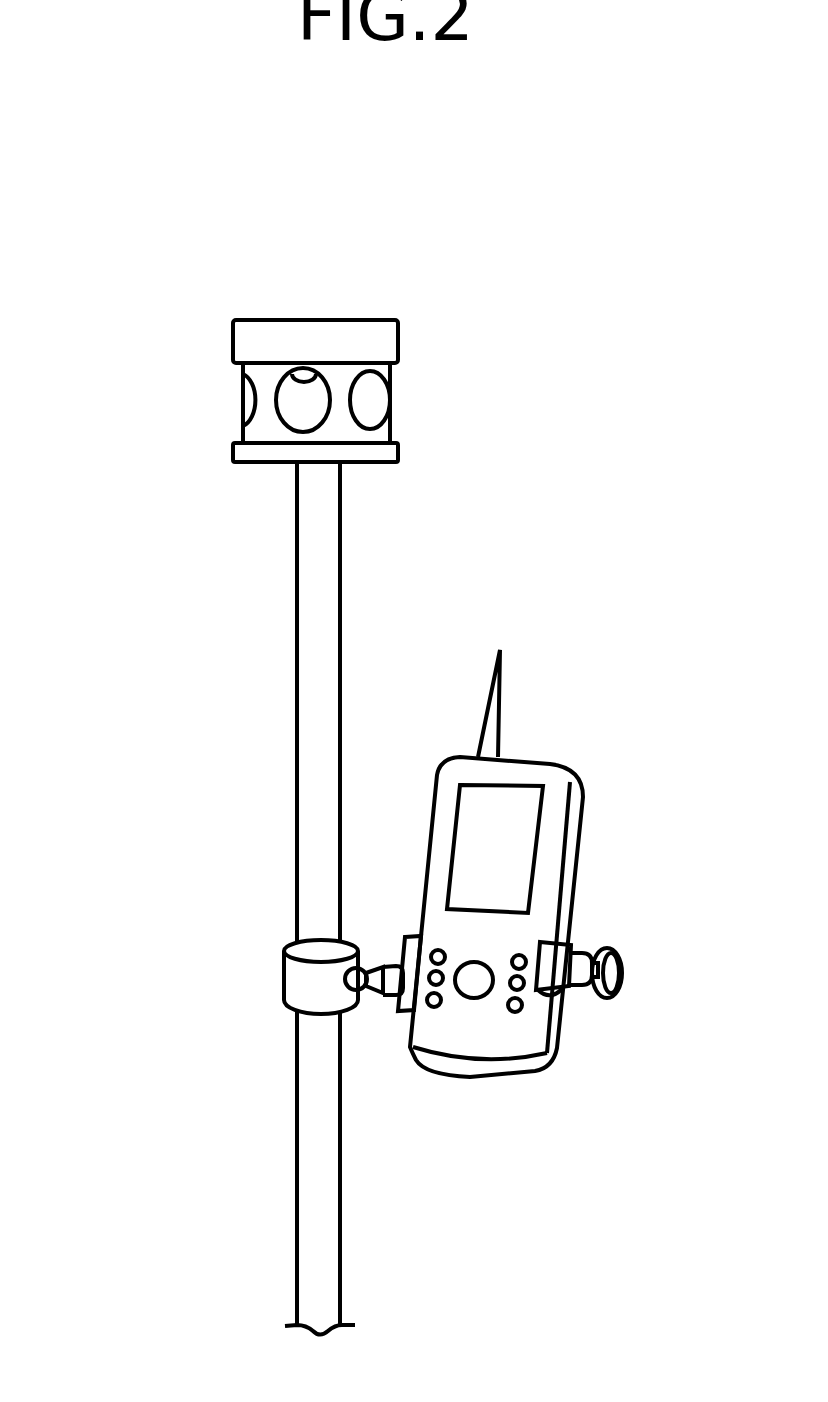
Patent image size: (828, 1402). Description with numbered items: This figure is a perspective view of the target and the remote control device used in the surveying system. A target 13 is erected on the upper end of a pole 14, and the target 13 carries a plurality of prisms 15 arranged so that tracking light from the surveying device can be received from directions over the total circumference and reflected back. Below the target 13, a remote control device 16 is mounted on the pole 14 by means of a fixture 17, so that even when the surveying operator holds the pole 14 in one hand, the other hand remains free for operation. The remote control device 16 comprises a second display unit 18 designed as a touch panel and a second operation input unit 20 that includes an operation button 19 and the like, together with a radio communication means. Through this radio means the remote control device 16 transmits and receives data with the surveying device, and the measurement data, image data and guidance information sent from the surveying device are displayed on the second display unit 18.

The target 13 is at (400, 378).
The pole 14 is at (297, 765).
The prism 15 is at (317, 375).
The remote control device 16 is at (580, 823).
The fixture 17 is at (283, 1000).
The second display unit 18 is at (478, 823).
The operation button 19 is at (458, 998).
The second operation input unit 20 is at (487, 1010).